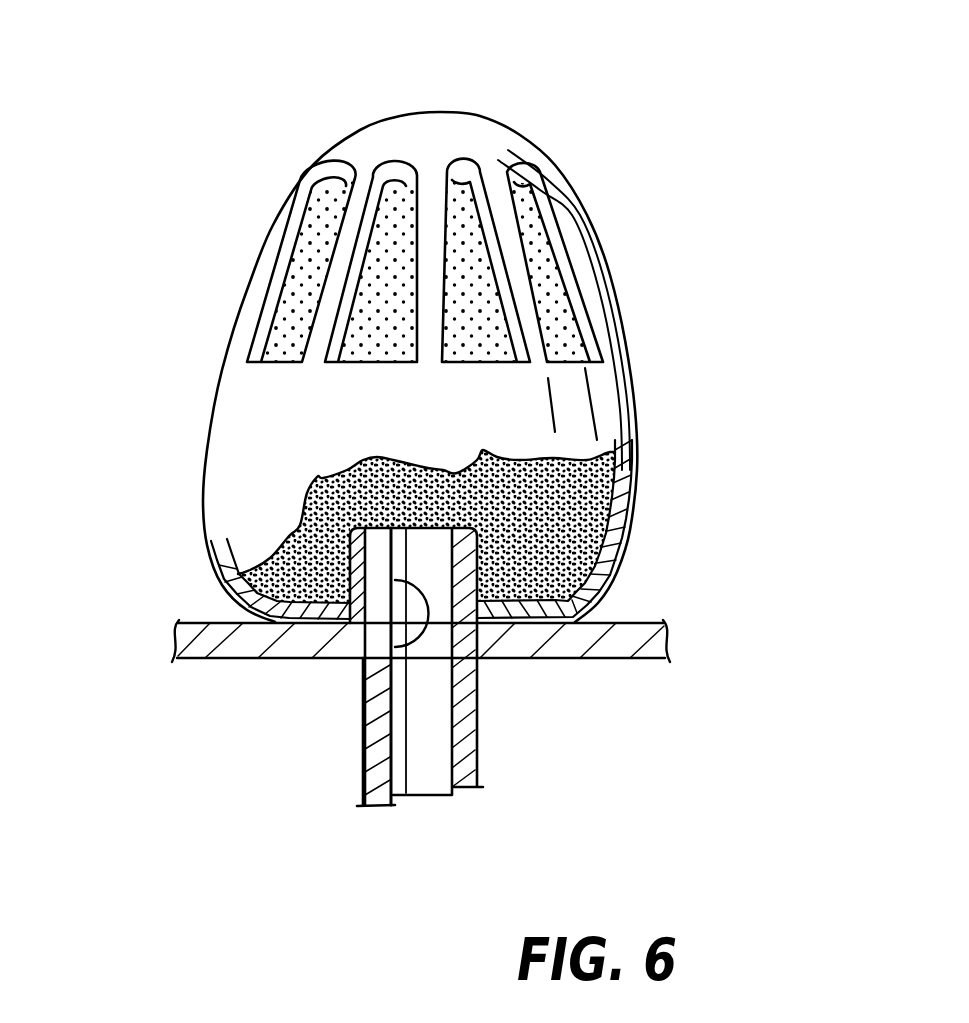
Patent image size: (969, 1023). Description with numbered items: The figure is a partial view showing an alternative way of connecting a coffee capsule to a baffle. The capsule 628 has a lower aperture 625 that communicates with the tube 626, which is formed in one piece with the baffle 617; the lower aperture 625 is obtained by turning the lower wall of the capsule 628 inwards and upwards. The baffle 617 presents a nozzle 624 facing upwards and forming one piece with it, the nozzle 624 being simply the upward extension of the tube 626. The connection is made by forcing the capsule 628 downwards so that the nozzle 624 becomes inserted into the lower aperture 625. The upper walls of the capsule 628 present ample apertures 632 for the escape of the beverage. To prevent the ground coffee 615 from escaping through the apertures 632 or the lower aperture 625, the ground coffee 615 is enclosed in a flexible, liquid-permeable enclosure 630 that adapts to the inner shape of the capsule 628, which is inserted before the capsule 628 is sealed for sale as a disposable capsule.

The ground coffee 615 is at (573, 520).
The baffle 617 is at (207, 659).
The nozzle 624 is at (385, 655).
The lower aperture 625 is at (273, 553).
The tube 626 is at (477, 740).
The capsule 628 is at (219, 392).
The liquid-permeable enclosure 630 is at (390, 222).
The apertures 632 is at (372, 252).